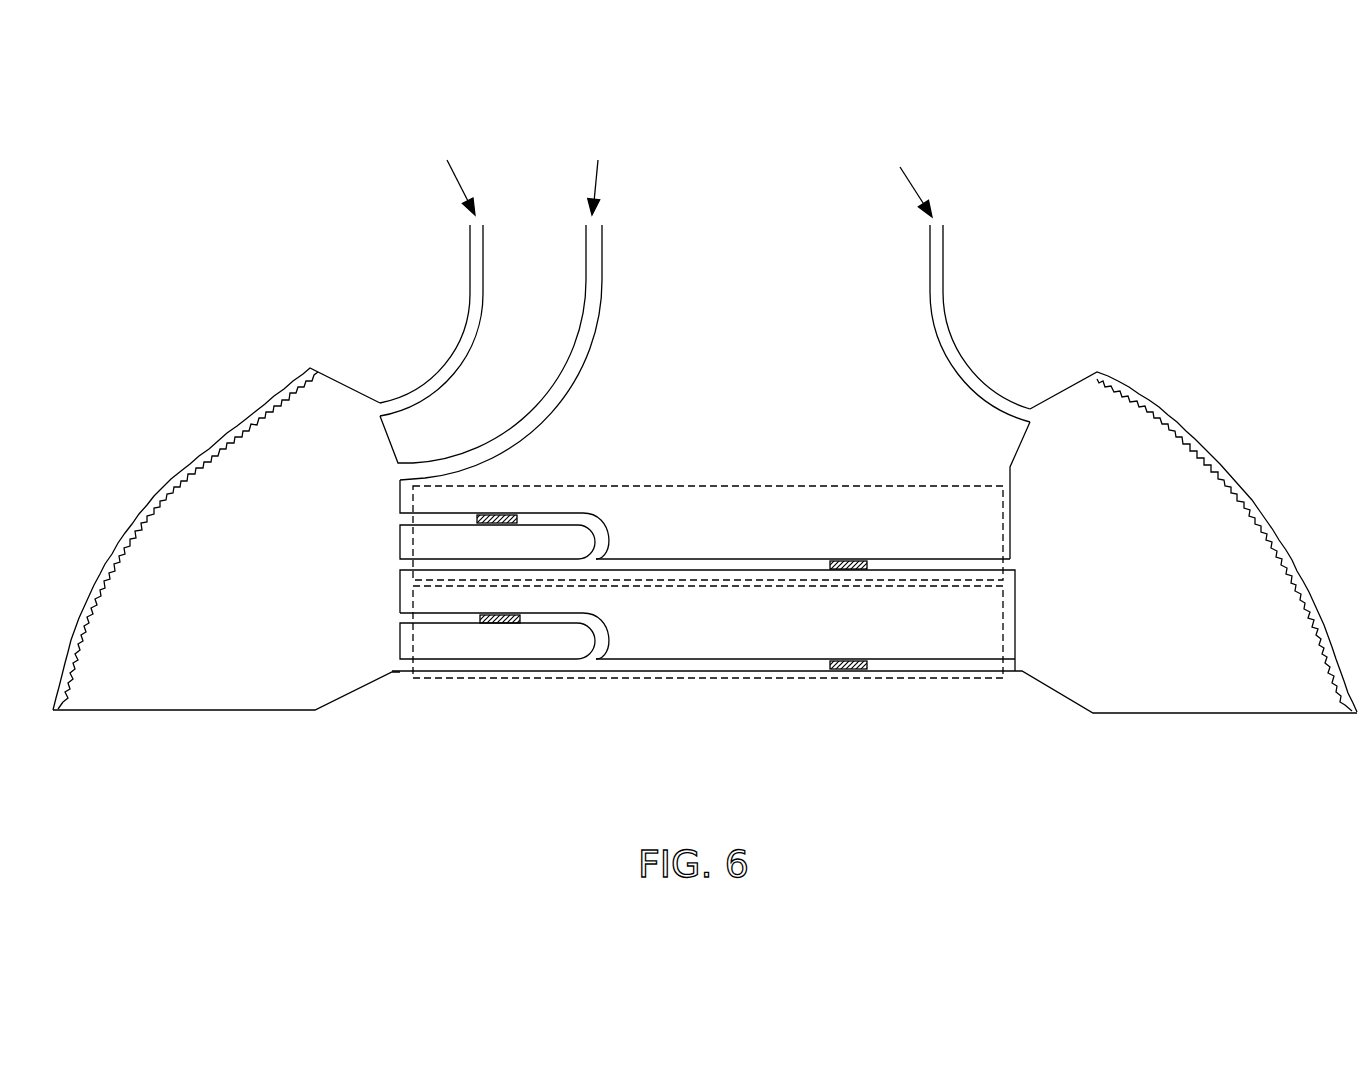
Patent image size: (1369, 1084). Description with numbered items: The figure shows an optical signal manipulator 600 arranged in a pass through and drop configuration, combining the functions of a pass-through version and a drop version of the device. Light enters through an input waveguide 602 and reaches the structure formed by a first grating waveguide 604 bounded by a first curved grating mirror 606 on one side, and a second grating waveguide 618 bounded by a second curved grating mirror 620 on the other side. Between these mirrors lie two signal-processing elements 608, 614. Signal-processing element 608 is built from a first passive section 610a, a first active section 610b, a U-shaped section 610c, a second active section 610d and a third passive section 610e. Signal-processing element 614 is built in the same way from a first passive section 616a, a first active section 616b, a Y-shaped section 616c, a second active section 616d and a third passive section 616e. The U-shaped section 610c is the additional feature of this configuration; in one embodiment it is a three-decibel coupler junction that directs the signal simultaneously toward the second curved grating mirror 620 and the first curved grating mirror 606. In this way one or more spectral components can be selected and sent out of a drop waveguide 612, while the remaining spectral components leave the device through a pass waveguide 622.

The optical signal manipulator 600 is at (150, 224).
The input waveguide 602 is at (470, 297).
The first grating waveguide 604 is at (282, 542).
The first curved grating mirror 606 is at (220, 430).
The signal-processing element 608 is at (709, 486).
The first passive section 610a is at (426, 513).
The first active section 610b is at (505, 513).
The U-shaped section 610c is at (600, 522).
The second active section 610d is at (838, 560).
The third passive section 610e is at (914, 560).
The drop waveguide 612 is at (600, 300).
The signal-processing element 614 is at (708, 680).
The first passive section 616a is at (423, 613).
The first active section 616b is at (503, 613).
The Y-shaped section 616c is at (600, 622).
The second active section 616d is at (838, 660).
The third passive section 616e is at (914, 660).
The second grating waveguide 618 is at (1158, 550).
The second curved grating mirror 620 is at (1165, 410).
The pass waveguide 622 is at (930, 287).